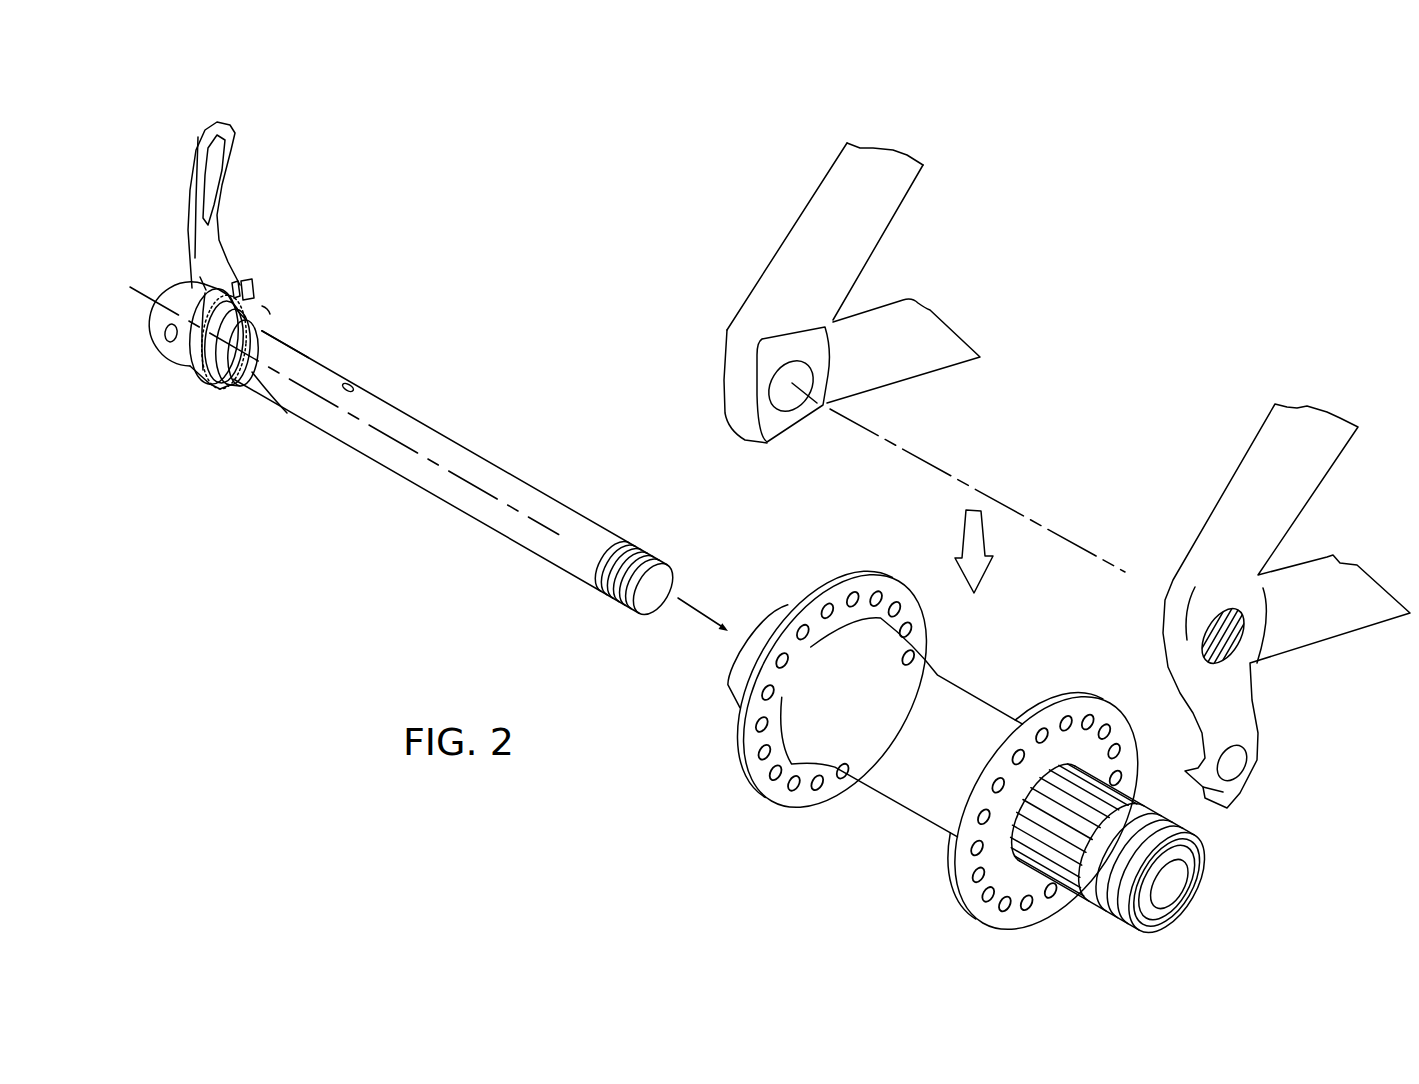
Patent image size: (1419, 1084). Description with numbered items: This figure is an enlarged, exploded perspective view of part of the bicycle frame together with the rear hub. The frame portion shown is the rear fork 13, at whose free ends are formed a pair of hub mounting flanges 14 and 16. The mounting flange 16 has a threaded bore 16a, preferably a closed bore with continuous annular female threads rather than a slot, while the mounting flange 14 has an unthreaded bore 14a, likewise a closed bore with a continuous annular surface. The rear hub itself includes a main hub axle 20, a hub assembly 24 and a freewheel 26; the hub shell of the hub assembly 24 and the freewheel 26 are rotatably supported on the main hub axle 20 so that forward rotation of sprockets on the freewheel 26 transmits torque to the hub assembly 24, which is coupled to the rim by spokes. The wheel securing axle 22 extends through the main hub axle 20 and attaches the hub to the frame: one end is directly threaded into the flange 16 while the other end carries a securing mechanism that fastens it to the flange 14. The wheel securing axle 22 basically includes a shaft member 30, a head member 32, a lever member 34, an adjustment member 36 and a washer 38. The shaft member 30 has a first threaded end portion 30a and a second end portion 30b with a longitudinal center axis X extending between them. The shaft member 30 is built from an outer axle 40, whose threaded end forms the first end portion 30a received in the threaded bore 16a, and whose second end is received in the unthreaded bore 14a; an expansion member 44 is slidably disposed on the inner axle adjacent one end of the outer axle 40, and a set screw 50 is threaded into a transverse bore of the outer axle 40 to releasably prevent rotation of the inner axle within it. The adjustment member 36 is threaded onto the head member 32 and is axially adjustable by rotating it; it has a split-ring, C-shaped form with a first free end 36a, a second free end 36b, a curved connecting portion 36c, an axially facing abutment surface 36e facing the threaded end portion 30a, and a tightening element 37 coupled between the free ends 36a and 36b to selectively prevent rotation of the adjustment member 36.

The rear fork 13 is at (905, 218).
The hub mounting flange 14 is at (725, 365).
The unthreaded bore 14a is at (806, 405).
The hub mounting flange 16 is at (1166, 590).
The threaded bore 16a is at (1232, 608).
The main hub axle 20 is at (1204, 890).
The wheel securing axle 22 is at (310, 268).
The hub assembly 24 is at (894, 829).
The freewheel 26 is at (1222, 834).
The shaft member 30 is at (345, 361).
The first threaded end portion 30a is at (650, 553).
The second end portion 30b is at (289, 342).
The head member 32 is at (161, 355).
The lever member 34 is at (244, 175).
The adjustment member 36 is at (209, 401).
The first free end 36a is at (233, 288).
The second free end 36b is at (203, 276).
The curved connecting portion 36c is at (200, 369).
The axially facing abutment surface 36e is at (270, 310).
The tightening element 37 is at (249, 285).
The washer 38 is at (277, 327).
The outer axle 40 is at (502, 480).
The expansion member 44 is at (287, 414).
The set screw 50 is at (353, 387).
The longitudinal center axis X is at (390, 437).